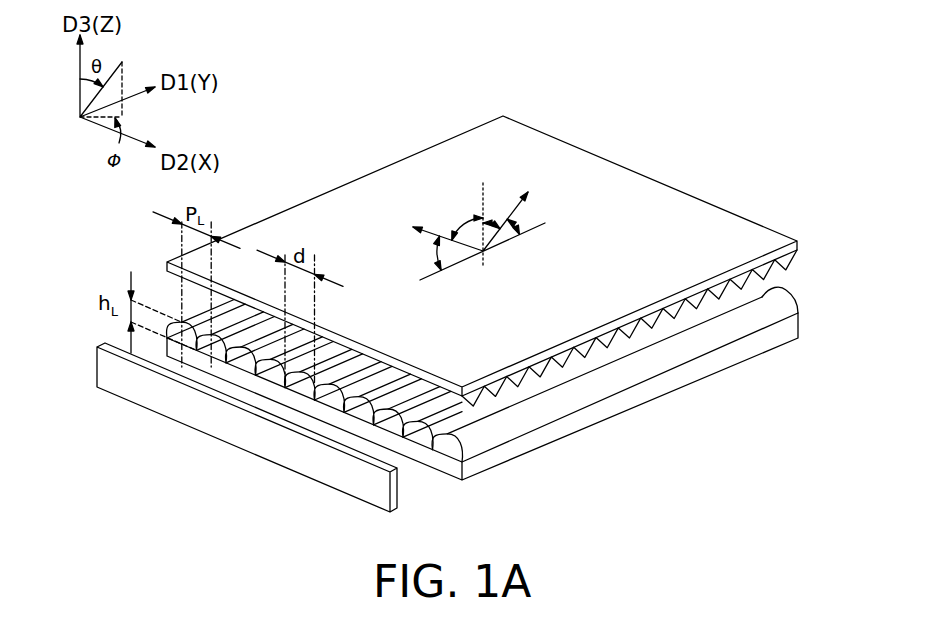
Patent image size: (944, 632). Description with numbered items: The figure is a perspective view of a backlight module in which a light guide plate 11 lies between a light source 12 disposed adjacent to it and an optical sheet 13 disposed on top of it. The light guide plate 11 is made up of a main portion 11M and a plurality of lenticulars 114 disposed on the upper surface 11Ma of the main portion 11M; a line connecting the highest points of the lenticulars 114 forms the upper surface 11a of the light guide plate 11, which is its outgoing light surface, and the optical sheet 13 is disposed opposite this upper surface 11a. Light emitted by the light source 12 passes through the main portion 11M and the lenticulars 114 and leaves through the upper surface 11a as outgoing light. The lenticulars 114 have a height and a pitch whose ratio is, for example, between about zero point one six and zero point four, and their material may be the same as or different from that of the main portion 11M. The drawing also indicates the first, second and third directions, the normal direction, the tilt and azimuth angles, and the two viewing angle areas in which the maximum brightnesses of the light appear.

The optical sheet 13 is at (777, 212).
The light guide plate 11 is at (532, 366).
The lenticulars 114 is at (787, 275).
The main portion 11M is at (511, 387).
The upper surface 11a is at (448, 432).
The upper surface of the main portion 11Ma is at (545, 422).
The light source 12 is at (115, 376).